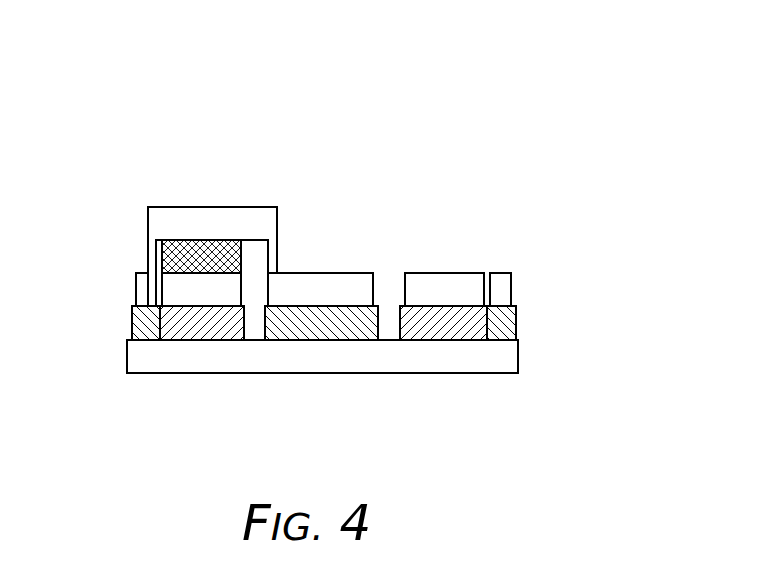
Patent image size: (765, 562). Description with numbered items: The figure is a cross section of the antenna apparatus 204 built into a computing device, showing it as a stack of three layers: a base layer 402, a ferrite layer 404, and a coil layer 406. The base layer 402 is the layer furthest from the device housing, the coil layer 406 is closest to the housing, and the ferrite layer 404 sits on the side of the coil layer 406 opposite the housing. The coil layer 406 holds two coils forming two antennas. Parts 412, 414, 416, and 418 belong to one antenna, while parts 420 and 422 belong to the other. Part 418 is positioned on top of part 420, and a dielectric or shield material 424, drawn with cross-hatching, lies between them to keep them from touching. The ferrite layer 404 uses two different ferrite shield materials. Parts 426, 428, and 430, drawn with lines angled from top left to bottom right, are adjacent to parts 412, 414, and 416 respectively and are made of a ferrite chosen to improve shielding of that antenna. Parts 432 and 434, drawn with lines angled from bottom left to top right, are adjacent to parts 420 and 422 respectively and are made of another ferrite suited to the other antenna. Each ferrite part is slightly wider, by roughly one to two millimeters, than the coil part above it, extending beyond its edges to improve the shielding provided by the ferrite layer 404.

The antenna apparatus 204 is at (568, 140).
The base layer 402 is at (525, 342).
The ferrite layer 404 is at (525, 308).
The coil layer 406 is at (525, 208).
The part of the antenna (coil layer) 412 is at (137, 290).
The part of the antenna (coil layer) 414 is at (323, 273).
The part of the antenna (coil layer) 416 is at (500, 273).
The part of the antenna (coil layer) 418 is at (212, 206).
The part of the antenna (coil layer) 420 is at (203, 308).
The part of the antenna (coil layer) 422 is at (423, 273).
The dielectric or shield material 424 is at (163, 255).
The part of the ferrite layer 426 is at (145, 340).
The part of the ferrite layer 428 is at (323, 340).
The part of the ferrite layer 430 is at (500, 340).
The part of the ferrite layer 432 is at (203, 340).
The part of the ferrite layer 434 is at (443, 340).